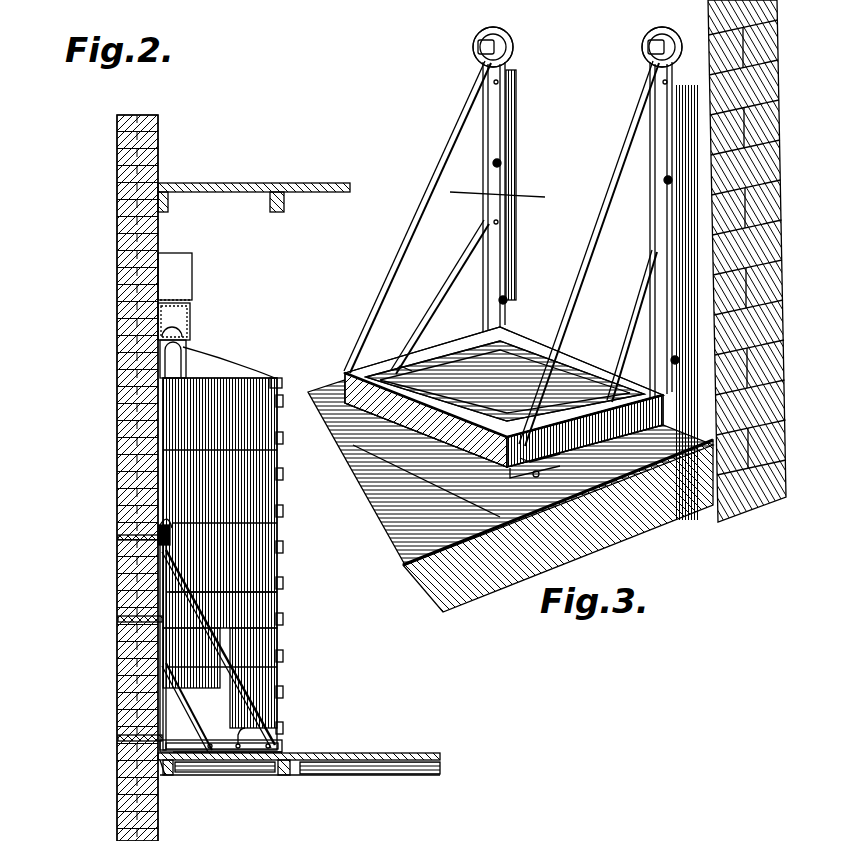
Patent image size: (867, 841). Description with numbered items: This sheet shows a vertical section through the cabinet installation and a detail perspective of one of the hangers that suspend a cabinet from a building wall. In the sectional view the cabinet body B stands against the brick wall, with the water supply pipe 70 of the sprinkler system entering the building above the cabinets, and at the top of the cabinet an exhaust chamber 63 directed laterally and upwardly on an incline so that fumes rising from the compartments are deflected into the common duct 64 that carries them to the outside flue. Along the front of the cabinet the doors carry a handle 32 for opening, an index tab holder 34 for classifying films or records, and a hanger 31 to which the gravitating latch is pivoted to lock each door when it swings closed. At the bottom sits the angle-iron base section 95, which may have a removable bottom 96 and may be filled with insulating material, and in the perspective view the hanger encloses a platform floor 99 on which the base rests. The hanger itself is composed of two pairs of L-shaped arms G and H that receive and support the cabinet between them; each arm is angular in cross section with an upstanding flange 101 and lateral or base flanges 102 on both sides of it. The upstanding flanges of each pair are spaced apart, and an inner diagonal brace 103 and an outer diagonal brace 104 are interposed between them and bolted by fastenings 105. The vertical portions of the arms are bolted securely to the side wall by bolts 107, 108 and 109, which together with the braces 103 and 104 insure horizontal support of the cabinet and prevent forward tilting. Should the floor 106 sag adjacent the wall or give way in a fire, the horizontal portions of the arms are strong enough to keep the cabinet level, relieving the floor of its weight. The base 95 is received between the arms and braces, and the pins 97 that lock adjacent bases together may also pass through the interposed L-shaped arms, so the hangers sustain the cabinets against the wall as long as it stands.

In FIG. 2, the water supply pipe 70 is at (177, 206).
In FIG. 2, the duct 64 is at (195, 270).
In FIG. 2, the exhaust chamber 63 is at (182, 350).
In FIG. 2, the removable bottom 96 is at (232, 349).
In FIG. 2, the casing B is at (183, 410).
In FIG. 2, the hanger 31 is at (280, 382).
In FIG. 2, the index tab holder 34 is at (284, 438).
In FIG. 2, the handle 32 is at (284, 547).
In FIG. 2, the bolt 107 is at (162, 530).
In FIG. 3, the bolt 107 is at (652, 52).
In FIG. 2, the fastening 105 is at (158, 556).
In FIG. 3, the fastening 105 is at (490, 220).
In FIG. 2, the bolt 108 is at (152, 612).
In FIG. 3, the bolt 108 is at (665, 179).
In FIG. 2, the outer diagonal brace 104 is at (215, 622).
In FIG. 3, the outer diagonal brace 104 is at (606, 220).
In FIG. 2, the inner diagonal brace 103 is at (182, 685).
In FIG. 3, the inner diagonal brace 103 is at (480, 243).
In FIG. 2, the bolt 97 is at (238, 730).
In FIG. 3, the bolt 97 is at (400, 368).
In FIG. 2, the base section 95 is at (285, 742).
In FIG. 3, the base section 95 is at (350, 372).
In FIG. 2, the floor 106 is at (338, 770).
In FIG. 3, the floor 106 is at (465, 512).
In FIG. 2, the lateral flange 102 is at (175, 766).
In FIG. 3, the lateral flange 102 is at (538, 478).
In FIG. 2, the upstanding flange 101 is at (252, 758).
In FIG. 3, the upstanding flange 101 is at (527, 475).
In FIG. 3, the platform floor 99 is at (538, 368).
In FIG. 3, the bolt 109 is at (506, 298).
In FIG. 3, the L-shaped arm G is at (505, 120).
In FIG. 3, the L-shaped arm H is at (665, 110).